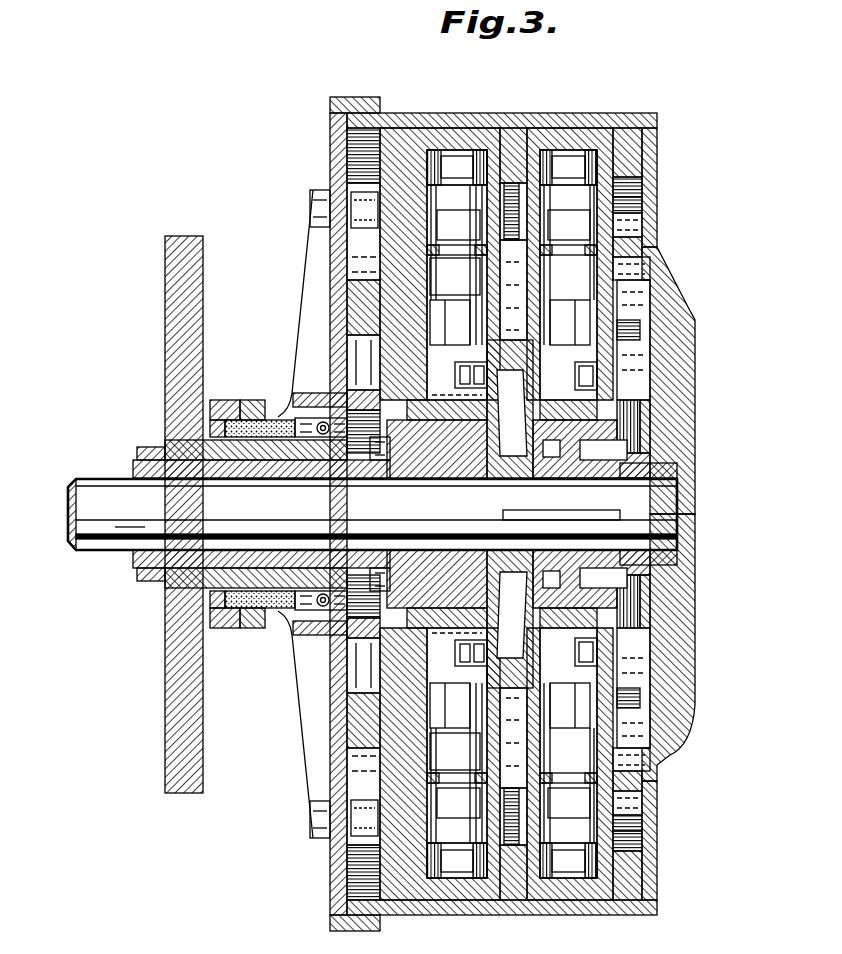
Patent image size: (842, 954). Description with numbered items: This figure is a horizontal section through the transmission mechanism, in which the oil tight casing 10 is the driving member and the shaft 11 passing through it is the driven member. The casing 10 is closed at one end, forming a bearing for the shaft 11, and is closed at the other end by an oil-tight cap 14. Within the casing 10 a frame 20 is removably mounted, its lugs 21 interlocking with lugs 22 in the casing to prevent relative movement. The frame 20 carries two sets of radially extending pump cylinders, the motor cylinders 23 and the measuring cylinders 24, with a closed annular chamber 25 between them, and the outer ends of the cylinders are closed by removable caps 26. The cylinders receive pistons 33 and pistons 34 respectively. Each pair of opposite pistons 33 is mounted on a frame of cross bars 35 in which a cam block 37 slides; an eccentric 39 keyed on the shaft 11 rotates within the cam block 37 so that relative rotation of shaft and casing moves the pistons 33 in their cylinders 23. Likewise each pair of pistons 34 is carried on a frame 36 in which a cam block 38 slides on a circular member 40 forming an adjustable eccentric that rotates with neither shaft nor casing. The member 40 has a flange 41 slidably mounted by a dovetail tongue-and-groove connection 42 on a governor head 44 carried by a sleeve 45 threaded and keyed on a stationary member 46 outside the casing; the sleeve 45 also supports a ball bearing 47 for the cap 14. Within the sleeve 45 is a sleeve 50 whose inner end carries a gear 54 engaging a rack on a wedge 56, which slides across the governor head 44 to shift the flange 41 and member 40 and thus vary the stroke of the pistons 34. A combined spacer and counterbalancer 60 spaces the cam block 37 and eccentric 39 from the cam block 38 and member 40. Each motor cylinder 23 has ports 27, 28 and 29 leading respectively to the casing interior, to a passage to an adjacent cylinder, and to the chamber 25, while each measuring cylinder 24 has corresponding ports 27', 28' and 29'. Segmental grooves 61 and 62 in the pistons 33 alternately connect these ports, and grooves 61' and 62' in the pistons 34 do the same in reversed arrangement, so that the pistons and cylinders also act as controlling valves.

The oil tight casing 10 is at (626, 115).
The shaft 11 is at (68, 540).
The oil-tight cap 14 is at (332, 877).
The frame 20 is at (538, 130).
The lugs 21 is at (640, 147).
The lugs 22 is at (632, 186).
The motor cylinders 23 is at (634, 162).
The measuring cylinders 24 is at (365, 155).
The closed annular chamber 25 is at (512, 130).
The removable caps 26 is at (465, 130).
The port 27 is at (618, 511).
The port 27' is at (429, 524).
The port 28 is at (569, 779).
The port 28' is at (458, 783).
The port 29 is at (567, 539).
The port 29' is at (454, 572).
The pistons 33 is at (635, 205).
The pistons 34 is at (393, 773).
The cross bars 35 is at (600, 393).
The frame 36 is at (463, 378).
The cam block 37 is at (607, 417).
The cam block 38 is at (512, 615).
The eccentric 39 is at (591, 514).
The circular member 40 is at (443, 580).
The flange 41 is at (338, 330).
The dovetail tongue-and-groove connection 42 is at (355, 292).
The governor head 44 is at (352, 358).
The sleeve 45 is at (167, 450).
The stationary member 46 is at (170, 313).
The ball bearing 47 is at (287, 647).
The sleeve 50 is at (140, 566).
The gear 54 is at (386, 478).
The wedge 56 is at (345, 640).
The combined spacer and counterbalancer 60 is at (512, 413).
The segmental groove 61 is at (656, 509).
The segmental groove 61' is at (455, 276).
The segmental groove 62 is at (625, 490).
The segmental groove 62' is at (458, 225).